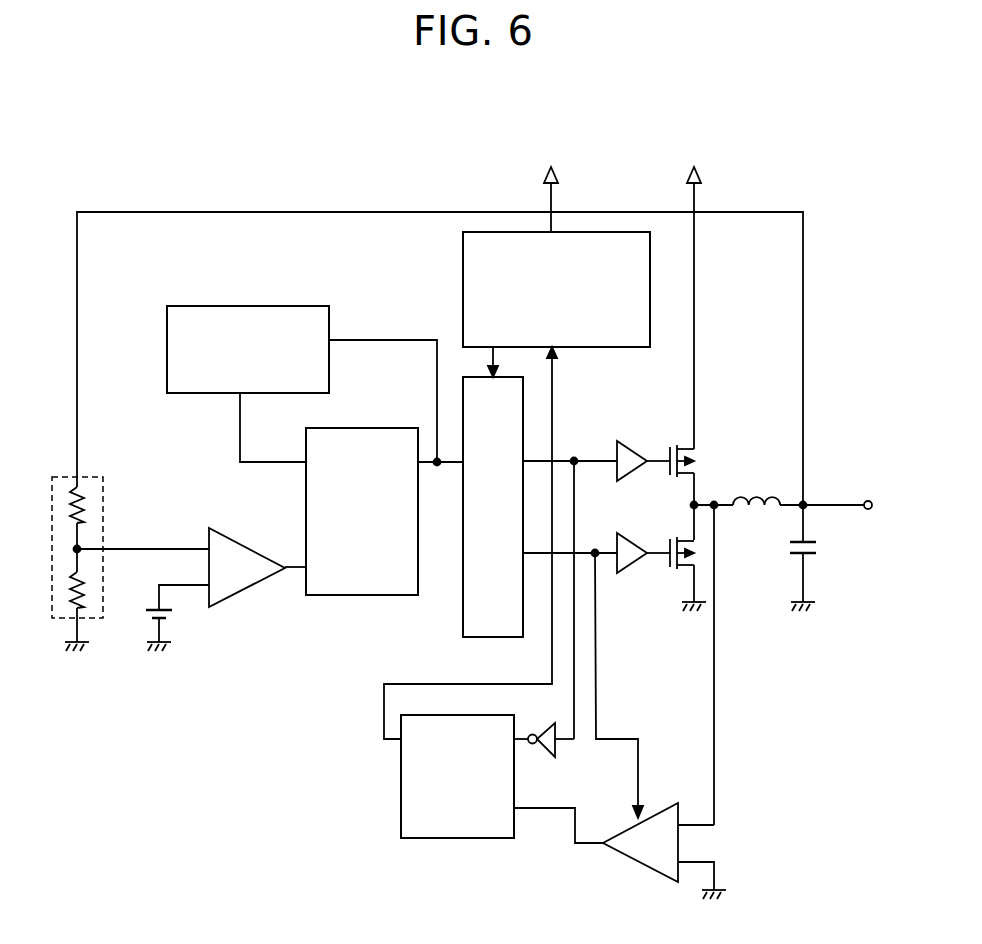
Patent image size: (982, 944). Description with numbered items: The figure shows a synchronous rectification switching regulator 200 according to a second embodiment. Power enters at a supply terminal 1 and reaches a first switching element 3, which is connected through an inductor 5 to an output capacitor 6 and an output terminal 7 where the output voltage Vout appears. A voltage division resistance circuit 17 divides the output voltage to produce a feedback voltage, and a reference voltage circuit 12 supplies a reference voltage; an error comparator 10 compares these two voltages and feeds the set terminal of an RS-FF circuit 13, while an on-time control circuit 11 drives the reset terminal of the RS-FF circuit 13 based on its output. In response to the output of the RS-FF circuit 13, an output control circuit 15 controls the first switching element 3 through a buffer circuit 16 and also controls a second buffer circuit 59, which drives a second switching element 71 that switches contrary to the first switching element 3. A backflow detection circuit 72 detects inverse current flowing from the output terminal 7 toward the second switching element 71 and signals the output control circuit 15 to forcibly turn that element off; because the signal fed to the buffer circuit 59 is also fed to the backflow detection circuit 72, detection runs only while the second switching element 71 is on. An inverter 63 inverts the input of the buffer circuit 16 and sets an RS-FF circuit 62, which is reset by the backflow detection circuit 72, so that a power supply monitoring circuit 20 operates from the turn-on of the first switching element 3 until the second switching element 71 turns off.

The switching power supply circuit 200 is at (700, 95).
The input terminal 1 is at (704, 173).
The first switching element 3 is at (698, 458).
The inductor 5 is at (757, 492).
The output capacitor 6 is at (818, 549).
The output terminal 7 is at (869, 498).
The error comparator 10 is at (225, 536).
The on-time control circuit 11 is at (167, 349).
The reference voltage circuit 12 is at (176, 616).
The RS-FF circuit 13 is at (348, 597).
The output control circuit 15 is at (463, 615).
The buffer circuit 16 is at (632, 473).
The voltage division resistance circuit 17 is at (97, 477).
The power supply monitoring circuit 20 is at (463, 270).
The buffer circuit 59 is at (630, 565).
The RS-FF circuit 62 is at (451, 840).
The inverter 63 is at (557, 745).
The second switching element 71 is at (700, 552).
The backflow detection circuit 72 is at (637, 864).